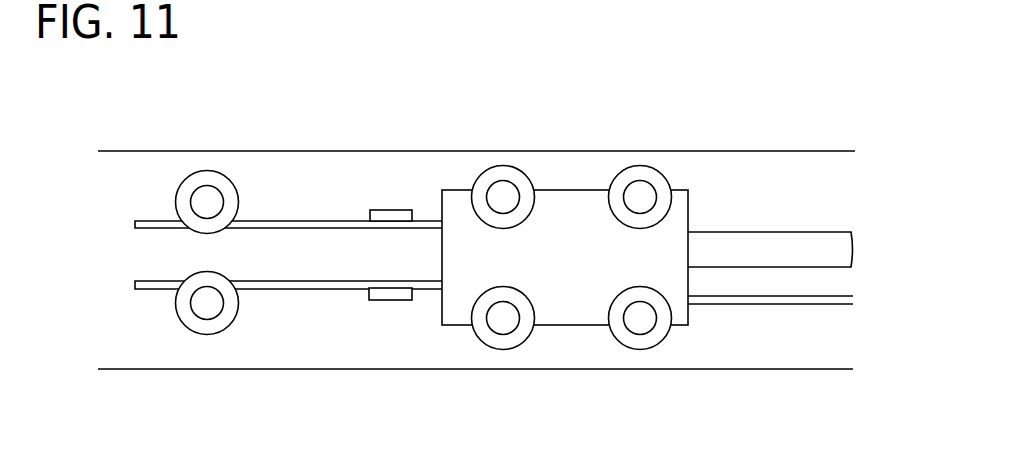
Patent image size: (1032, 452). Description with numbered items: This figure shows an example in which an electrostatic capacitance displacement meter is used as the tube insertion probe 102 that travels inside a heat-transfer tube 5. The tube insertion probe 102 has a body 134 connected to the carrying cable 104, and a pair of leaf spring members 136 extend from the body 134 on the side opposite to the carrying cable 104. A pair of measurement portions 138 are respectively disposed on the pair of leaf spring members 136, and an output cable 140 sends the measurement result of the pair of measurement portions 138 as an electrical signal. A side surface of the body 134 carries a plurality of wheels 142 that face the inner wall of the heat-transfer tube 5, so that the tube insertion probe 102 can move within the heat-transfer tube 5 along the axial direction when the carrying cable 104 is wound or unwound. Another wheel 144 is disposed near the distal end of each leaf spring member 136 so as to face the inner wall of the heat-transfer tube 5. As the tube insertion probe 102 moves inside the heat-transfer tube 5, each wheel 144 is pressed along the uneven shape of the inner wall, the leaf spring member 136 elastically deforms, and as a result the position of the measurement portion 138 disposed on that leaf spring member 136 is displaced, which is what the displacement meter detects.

The heat-transfer tube 5 is at (652, 151).
The tube insertion probe 102 is at (624, 202).
The carrying cable 104 is at (836, 231).
The body 134 is at (570, 190).
The leaf spring members 136 is at (302, 221).
The measurement portions 138 is at (387, 210).
The output cable 140 is at (795, 304).
The wheels 142 is at (497, 166).
The wheel 144 is at (205, 171).